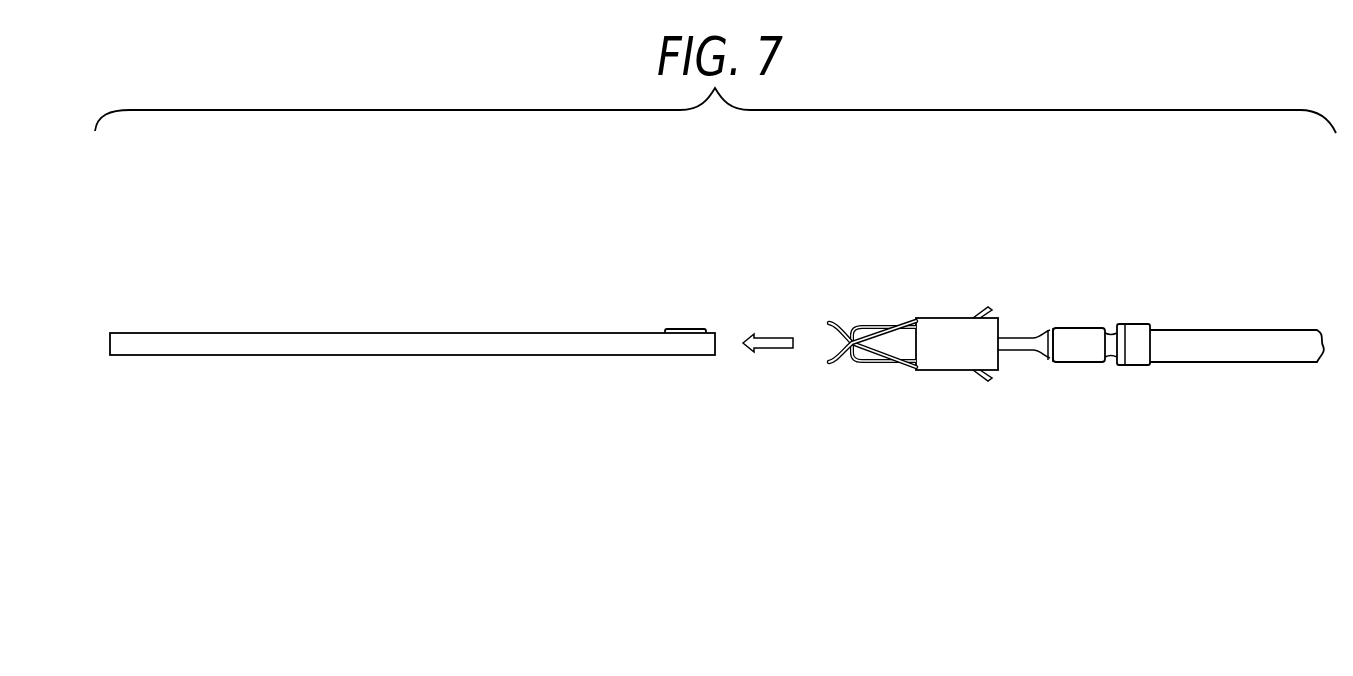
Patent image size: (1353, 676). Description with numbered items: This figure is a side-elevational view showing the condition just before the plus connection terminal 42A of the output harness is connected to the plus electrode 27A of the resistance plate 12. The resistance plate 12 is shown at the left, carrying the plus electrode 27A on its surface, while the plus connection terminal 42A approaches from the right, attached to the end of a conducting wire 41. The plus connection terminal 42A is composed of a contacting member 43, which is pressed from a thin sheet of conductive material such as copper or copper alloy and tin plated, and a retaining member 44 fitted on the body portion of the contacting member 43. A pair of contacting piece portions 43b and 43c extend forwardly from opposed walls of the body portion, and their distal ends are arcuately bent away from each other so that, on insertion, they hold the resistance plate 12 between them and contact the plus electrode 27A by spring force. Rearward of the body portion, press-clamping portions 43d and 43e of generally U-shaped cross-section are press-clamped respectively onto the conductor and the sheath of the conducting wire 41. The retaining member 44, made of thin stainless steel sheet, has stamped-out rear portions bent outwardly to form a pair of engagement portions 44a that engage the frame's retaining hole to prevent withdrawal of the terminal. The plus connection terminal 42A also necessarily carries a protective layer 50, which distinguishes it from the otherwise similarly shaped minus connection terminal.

The resistance plate 12 is at (378, 333).
The plus electrode 27A is at (680, 329).
The conducting wire 41 is at (1228, 343).
The plus connection terminal 42A is at (914, 348).
The contacting member 43 is at (1108, 348).
The contacting piece portion 43b is at (840, 320).
The contacting piece portion 43c is at (838, 365).
The press-clamping portion 43d is at (1070, 328).
The press-clamping portion 43e is at (1140, 366).
The retaining member 44 is at (873, 368).
The engagement portion 44a is at (984, 307).
The protective layer 50 is at (945, 318).